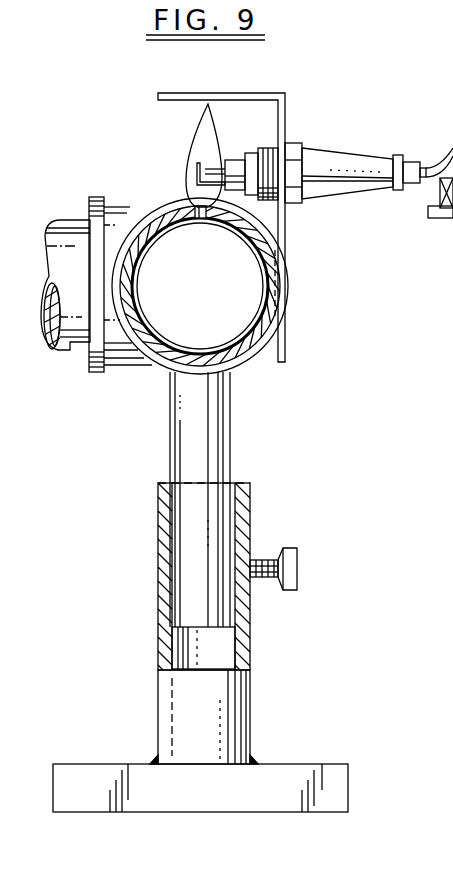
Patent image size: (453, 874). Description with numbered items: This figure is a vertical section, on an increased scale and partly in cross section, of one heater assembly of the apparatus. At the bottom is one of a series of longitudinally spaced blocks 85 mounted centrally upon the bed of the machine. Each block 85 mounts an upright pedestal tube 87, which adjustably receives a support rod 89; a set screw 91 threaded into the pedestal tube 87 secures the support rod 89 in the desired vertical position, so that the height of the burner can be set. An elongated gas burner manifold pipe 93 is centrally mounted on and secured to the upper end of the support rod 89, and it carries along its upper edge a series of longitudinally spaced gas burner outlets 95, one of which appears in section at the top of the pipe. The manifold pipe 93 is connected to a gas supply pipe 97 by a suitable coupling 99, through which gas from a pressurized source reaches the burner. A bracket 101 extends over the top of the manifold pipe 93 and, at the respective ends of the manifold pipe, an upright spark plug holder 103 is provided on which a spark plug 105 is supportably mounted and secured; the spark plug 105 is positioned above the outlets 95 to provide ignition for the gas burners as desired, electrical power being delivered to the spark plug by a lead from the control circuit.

The block 85 is at (338, 782).
The pedestal tube 87 is at (243, 711).
The support rod 89 is at (226, 460).
The set screw 91 is at (298, 557).
The gas burner manifold pipe 93 is at (272, 276).
The gas burner outlet 95 is at (200, 218).
The gas supply pipe 97 is at (67, 224).
The coupling 99 is at (97, 372).
The bracket 101 is at (200, 140).
The spark plug holder 103 is at (442, 218).
The spark plug 105 is at (340, 150).